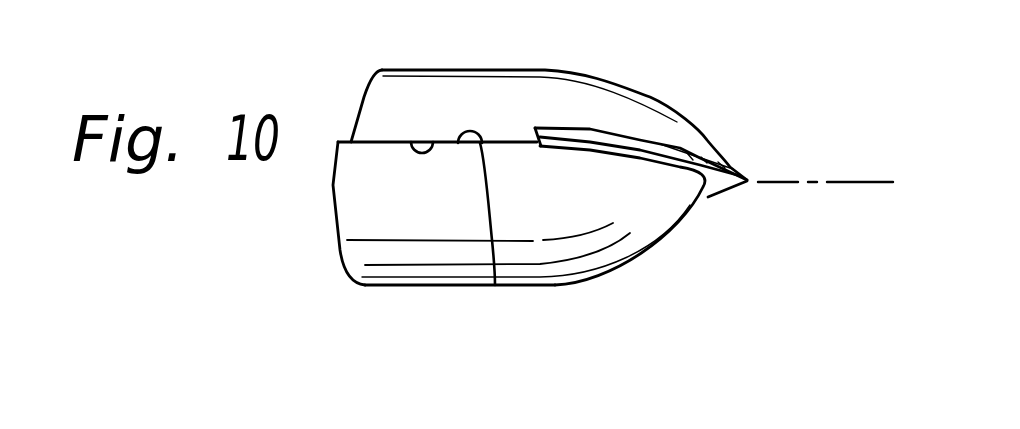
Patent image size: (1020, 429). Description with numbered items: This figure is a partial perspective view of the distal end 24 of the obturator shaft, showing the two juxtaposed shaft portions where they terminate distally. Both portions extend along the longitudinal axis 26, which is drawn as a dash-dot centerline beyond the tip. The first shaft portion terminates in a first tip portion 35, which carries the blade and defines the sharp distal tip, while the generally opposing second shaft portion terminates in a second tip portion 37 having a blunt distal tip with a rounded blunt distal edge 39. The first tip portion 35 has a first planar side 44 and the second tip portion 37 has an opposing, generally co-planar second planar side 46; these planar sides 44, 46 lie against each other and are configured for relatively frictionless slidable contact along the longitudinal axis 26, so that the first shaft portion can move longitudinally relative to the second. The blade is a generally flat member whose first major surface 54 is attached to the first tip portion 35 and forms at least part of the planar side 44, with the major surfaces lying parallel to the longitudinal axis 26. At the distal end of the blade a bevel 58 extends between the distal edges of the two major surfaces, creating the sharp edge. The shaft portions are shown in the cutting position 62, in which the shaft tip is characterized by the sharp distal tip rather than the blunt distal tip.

The distal end 24 is at (383, 142).
The longitudinal axis 26 is at (837, 182).
The first tip portion 35 is at (505, 84).
The second tip portion 37 is at (425, 258).
The blunt distal edge 39 is at (651, 246).
The first planar side 44 is at (438, 142).
The second planar side 46 is at (495, 285).
The first major surface 54 is at (717, 183).
The bevel 58 is at (744, 168).
The cutting position 62 is at (333, 183).